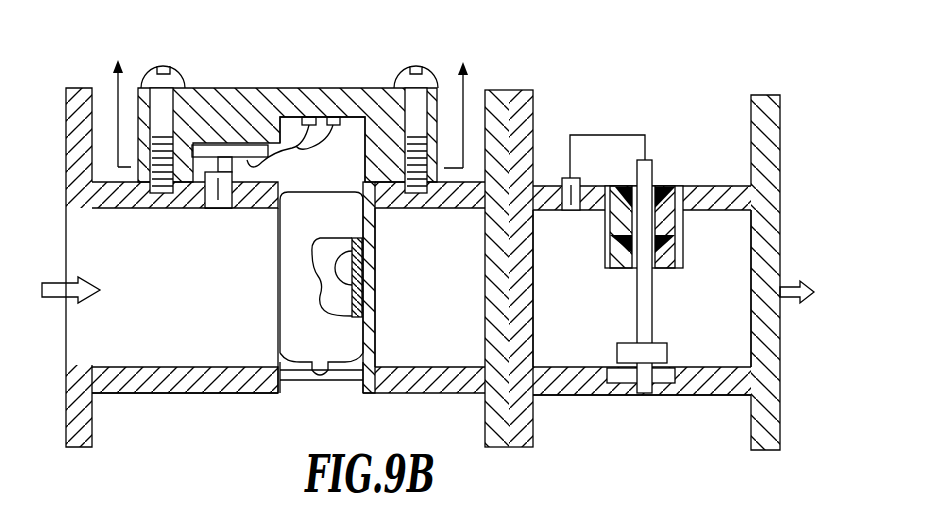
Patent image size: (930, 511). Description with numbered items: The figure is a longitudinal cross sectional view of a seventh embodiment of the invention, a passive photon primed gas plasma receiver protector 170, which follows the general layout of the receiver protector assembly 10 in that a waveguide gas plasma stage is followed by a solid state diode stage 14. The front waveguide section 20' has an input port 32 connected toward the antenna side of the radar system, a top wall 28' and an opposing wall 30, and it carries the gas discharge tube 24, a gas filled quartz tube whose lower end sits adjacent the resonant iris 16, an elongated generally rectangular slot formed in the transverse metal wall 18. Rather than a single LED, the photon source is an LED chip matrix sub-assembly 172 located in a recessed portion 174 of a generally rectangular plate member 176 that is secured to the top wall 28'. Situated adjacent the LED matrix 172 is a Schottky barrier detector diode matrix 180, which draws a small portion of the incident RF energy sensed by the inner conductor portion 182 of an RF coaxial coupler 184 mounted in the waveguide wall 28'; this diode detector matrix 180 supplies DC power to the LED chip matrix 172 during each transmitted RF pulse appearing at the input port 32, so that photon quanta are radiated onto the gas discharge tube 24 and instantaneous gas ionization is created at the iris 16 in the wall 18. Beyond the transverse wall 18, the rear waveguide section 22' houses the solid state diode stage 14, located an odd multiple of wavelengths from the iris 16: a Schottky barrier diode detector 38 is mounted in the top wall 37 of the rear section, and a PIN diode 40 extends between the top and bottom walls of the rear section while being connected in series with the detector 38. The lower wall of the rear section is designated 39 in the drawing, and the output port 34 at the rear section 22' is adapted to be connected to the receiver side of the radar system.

The passive photon primed gas plasma receiver protector 170 is at (736, 68).
The receiver protector assembly 10 is at (290, 99).
The generally rectangular plate member 176 is at (205, 88).
The Schottky barrier detector diode matrix 180 is at (227, 150).
The recessed portion 174 is at (290, 113).
The LED chip matrix sub-assembly 172 is at (336, 117).
The top wall 28' is at (181, 219).
The inner conductor portion 182 is at (217, 216).
The RF coaxial coupler 184 is at (222, 200).
The input port 32 is at (66, 338).
The wall 30 is at (148, 366).
The waveguide section 20' is at (185, 429).
The gas discharge tube 24 is at (287, 320).
The resonant iris 16 is at (347, 267).
The transverse metal wall 18 is at (367, 303).
The Schottky barrier diode detector 38 is at (568, 212).
The PIN diode 40 is at (623, 342).
The top wall 37 is at (742, 212).
The output port 34 is at (781, 258).
The solid state diode stage 14 is at (720, 311).
The bottom wall of outlet chamber 39 is at (735, 372).
The rear section of waveguide 22' is at (642, 419).